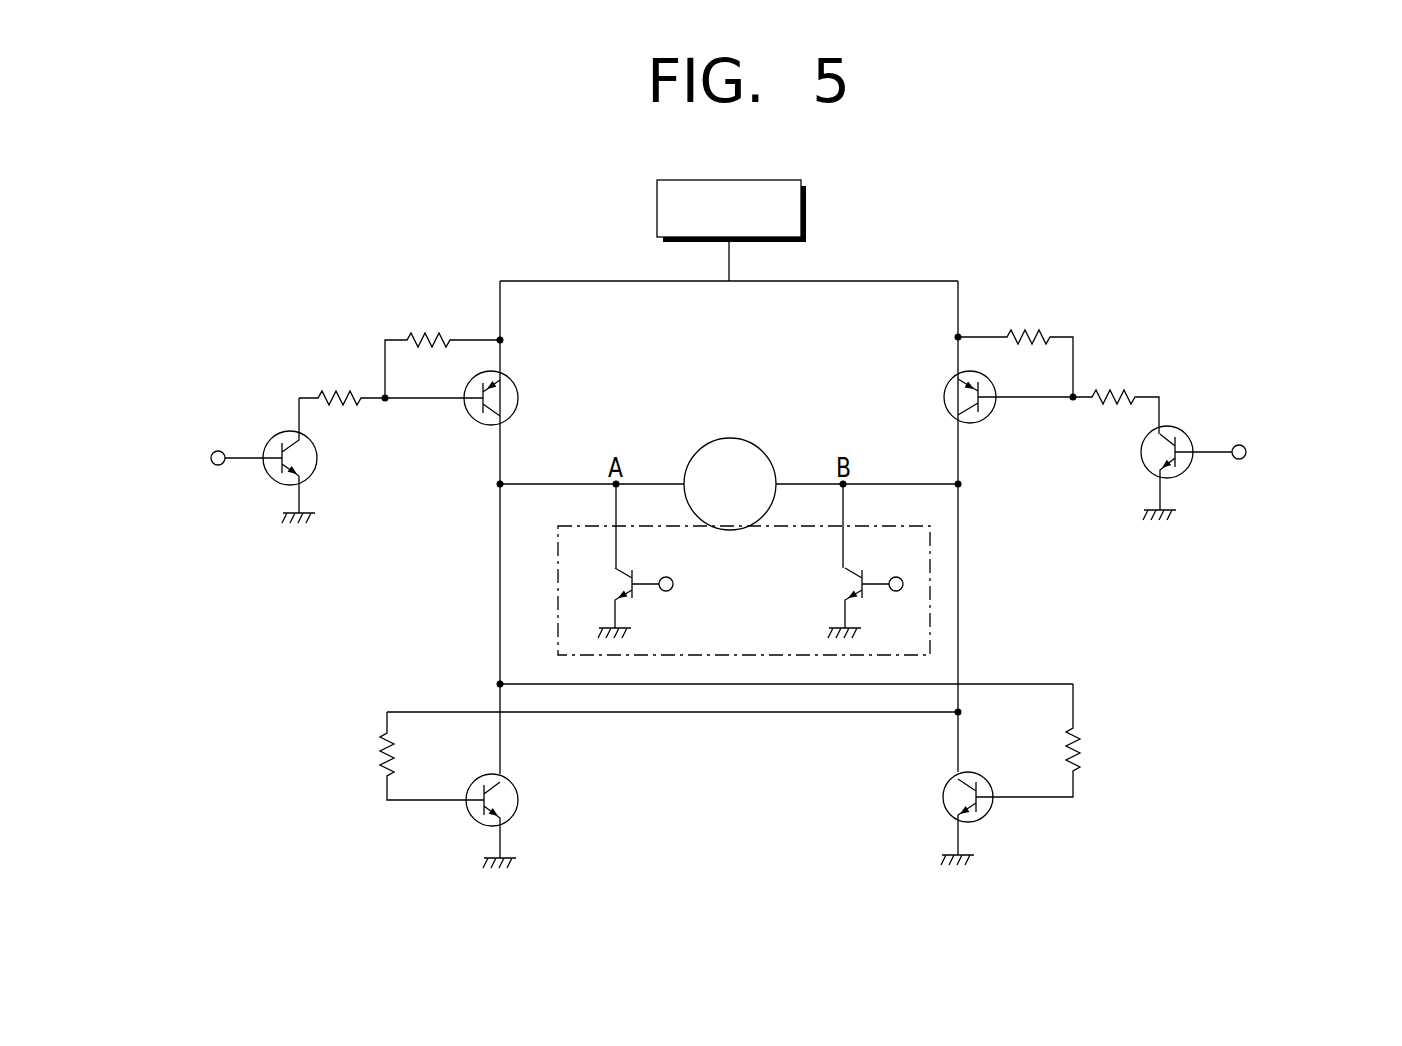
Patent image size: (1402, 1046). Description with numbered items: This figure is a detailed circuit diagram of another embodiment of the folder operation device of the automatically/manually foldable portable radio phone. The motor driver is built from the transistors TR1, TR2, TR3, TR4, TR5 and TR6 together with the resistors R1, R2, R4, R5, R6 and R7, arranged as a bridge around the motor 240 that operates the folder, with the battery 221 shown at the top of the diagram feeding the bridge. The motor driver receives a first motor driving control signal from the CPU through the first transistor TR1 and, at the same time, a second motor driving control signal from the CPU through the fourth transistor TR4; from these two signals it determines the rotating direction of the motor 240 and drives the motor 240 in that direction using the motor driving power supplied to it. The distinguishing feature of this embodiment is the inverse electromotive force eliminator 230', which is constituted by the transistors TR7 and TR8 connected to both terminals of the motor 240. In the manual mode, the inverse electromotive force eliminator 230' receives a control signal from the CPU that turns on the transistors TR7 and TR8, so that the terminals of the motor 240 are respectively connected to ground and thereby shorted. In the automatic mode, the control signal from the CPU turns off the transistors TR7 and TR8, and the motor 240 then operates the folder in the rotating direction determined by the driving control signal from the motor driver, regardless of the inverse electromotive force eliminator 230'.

The battery 221 is at (806, 206).
The motor 240 is at (748, 440).
The inverse electromotive force eliminator 230' is at (725, 570).
The first transistor TR1 is at (227, 460).
The transistor TR2 is at (451, 407).
The transistor TR3 is at (471, 821).
The fourth transistor TR4 is at (1248, 473).
The transistor TR5 is at (1008, 405).
The transistor TR6 is at (991, 818).
The transistor TR7 is at (650, 603).
The transistor TR8 is at (879, 603).
The resistor R1 is at (342, 381).
The resistor R2 is at (442, 347).
The resistor R4 is at (406, 756).
The resistor R5 is at (1116, 392).
The resistor R6 is at (1015, 345).
The resistor R7 is at (1054, 740).